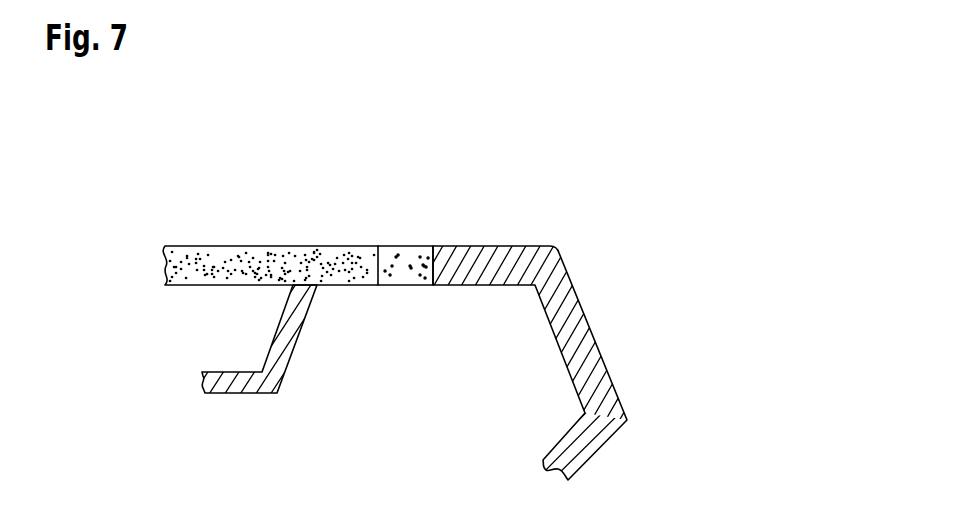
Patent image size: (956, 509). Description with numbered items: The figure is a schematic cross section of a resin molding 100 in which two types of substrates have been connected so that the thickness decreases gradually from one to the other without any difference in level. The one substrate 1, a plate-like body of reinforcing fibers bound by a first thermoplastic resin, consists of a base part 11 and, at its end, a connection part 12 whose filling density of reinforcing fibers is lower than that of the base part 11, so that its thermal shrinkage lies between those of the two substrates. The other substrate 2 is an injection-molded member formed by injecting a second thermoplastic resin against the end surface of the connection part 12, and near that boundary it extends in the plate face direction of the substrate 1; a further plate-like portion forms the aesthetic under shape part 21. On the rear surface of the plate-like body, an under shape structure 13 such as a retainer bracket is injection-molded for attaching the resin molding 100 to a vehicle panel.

The resin molding 100 is at (462, 119).
The one substrate 1 is at (442, 171).
The base part 11 is at (290, 265).
The connection part 12 is at (413, 265).
The under shape structure 13 is at (290, 365).
The other substrate 2 is at (572, 292).
The aesthetic under shape part 21 is at (530, 325).